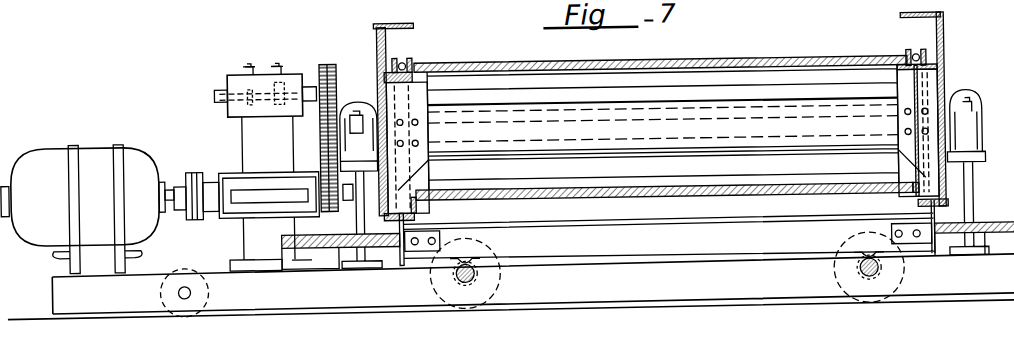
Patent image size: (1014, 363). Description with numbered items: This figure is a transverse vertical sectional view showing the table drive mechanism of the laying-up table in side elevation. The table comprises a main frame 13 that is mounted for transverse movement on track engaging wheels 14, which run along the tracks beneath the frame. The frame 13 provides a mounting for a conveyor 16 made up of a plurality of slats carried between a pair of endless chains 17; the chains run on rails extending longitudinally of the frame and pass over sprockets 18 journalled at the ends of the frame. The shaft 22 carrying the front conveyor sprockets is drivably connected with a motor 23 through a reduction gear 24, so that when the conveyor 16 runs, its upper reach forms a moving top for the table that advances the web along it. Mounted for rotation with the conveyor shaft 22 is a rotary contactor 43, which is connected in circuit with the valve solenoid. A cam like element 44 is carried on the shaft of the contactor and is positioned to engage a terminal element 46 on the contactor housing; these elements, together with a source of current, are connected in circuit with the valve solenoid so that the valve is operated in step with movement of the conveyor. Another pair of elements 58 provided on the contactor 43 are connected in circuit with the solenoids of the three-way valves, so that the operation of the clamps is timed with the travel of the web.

The main frame 13 is at (260, 297).
The track engaging wheels 14 is at (158, 288).
The conveyor 16 is at (495, 69).
The endless chains 17 is at (404, 63).
The sprockets 18 is at (412, 184).
The shaft 22 is at (661, 143).
The motor 23 is at (56, 198).
The reduction gear 24 is at (278, 151).
The rotary contactor 43 is at (228, 80).
The cam like element 44 is at (229, 109).
The terminal element 46 is at (258, 73).
The pair of elements 58 is at (293, 80).